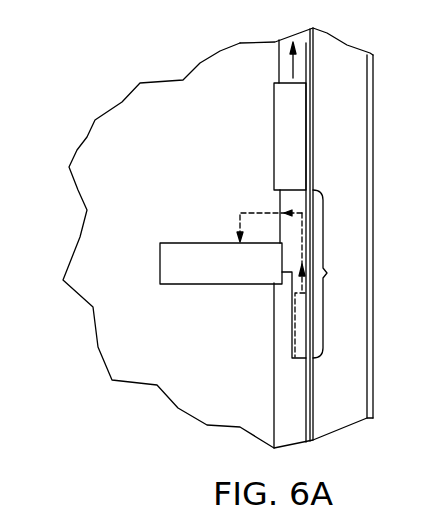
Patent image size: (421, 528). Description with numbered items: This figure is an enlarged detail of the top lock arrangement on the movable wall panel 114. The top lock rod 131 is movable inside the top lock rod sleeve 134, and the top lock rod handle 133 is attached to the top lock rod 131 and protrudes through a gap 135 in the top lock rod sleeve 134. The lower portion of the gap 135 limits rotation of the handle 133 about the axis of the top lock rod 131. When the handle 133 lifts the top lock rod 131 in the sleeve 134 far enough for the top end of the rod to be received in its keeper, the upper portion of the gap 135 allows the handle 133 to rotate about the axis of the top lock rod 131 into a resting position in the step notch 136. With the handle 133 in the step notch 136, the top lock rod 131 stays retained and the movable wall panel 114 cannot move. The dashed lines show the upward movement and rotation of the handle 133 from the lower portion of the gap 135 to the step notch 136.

The movable wall panel 114 is at (128, 263).
The top lock rod 131 is at (280, 202).
The top lock rod handle 133 is at (167, 285).
The top lock rod sleeve 134 is at (274, 132).
The gap 135 is at (327, 273).
The step notch 136 is at (300, 253).